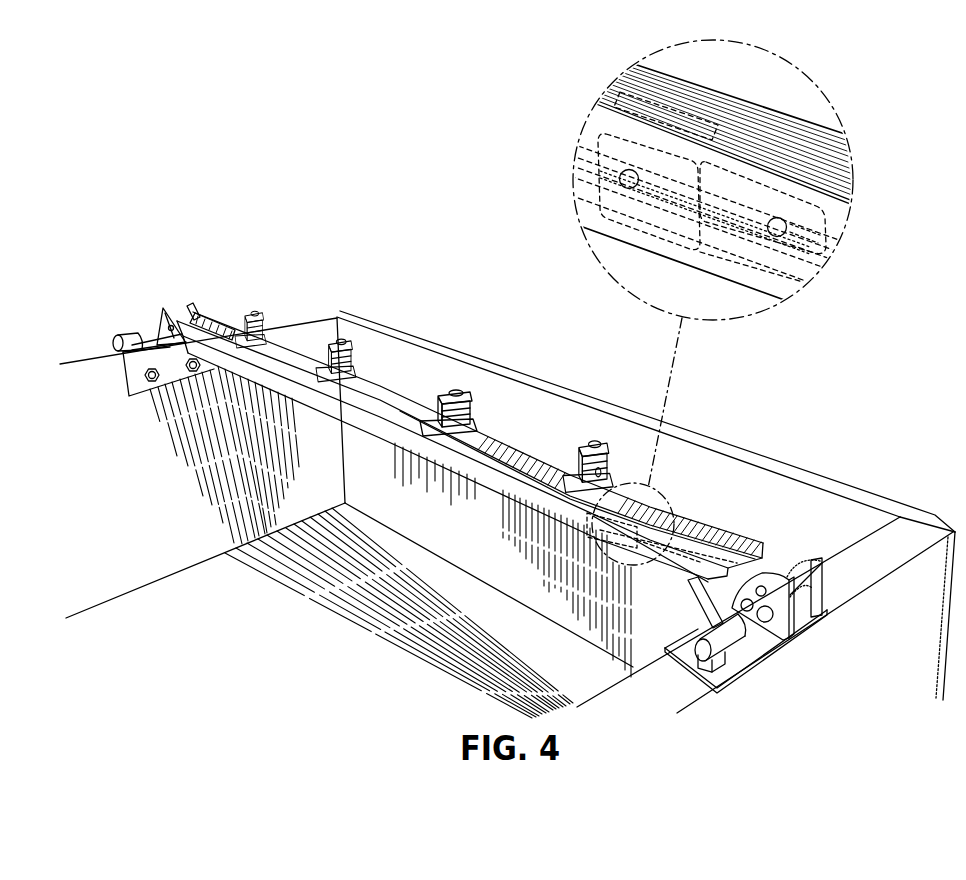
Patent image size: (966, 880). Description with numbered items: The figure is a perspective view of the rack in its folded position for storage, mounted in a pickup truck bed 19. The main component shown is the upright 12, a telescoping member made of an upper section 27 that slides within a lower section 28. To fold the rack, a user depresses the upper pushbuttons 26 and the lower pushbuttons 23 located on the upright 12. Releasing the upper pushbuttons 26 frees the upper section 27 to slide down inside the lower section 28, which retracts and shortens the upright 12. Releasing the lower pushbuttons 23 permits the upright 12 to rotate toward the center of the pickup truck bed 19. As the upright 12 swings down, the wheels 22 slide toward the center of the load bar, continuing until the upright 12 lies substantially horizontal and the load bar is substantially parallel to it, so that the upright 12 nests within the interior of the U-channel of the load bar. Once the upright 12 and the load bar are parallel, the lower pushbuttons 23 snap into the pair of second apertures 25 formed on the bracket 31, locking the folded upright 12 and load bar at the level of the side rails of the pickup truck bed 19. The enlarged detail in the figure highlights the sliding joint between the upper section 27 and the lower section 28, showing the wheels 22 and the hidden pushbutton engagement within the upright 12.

The upright 12 is at (617, 573).
The pickup truck bed 19 is at (192, 609).
The wheels 22 is at (603, 176).
The lower pushbuttons 23 is at (762, 637).
The second apertures 25 is at (802, 630).
The upper pushbuttons 26 is at (827, 245).
The upper section 27 is at (677, 200).
The lower section 28 is at (749, 280).
The bracket 31 is at (766, 568).